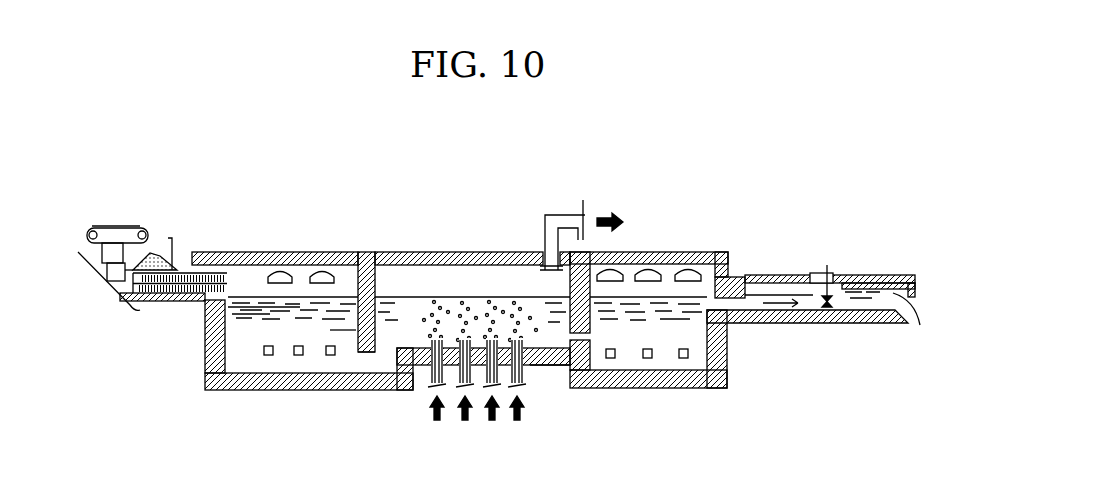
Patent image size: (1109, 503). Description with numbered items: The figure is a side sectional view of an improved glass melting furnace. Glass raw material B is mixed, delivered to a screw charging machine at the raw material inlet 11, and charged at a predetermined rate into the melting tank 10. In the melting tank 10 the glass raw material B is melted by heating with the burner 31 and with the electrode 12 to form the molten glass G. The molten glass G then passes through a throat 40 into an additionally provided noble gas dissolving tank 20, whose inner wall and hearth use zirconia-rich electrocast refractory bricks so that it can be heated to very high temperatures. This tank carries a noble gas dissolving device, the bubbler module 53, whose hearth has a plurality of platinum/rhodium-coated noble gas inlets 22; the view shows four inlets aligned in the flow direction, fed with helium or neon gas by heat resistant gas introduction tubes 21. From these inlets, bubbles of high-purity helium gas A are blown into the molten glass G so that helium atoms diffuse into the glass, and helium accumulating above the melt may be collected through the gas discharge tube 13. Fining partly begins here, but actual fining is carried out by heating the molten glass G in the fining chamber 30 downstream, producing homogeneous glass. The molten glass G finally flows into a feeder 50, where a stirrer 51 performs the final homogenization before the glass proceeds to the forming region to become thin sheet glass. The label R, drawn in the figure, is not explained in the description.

The melting tank 10 is at (297, 277).
The raw material inlet 11 is at (188, 258).
The electrode 12 is at (298, 355).
The gas discharge tube 13 is at (543, 217).
The noble gas dissolving tank 20 is at (432, 283).
The heat resistant gas introduction tube 21 is at (435, 385).
The noble gas inlet 22 is at (430, 340).
The fining chamber 30 is at (662, 360).
The burner 31 is at (346, 260).
The throat 40 is at (373, 360).
The feeder 50 is at (807, 303).
The stirrer 51 is at (827, 270).
The bubbler module 53 is at (542, 374).
The helium gas A is at (525, 407).
The glass raw material B is at (112, 228).
The molten glass G is at (348, 363).
The raw material R is at (205, 338).